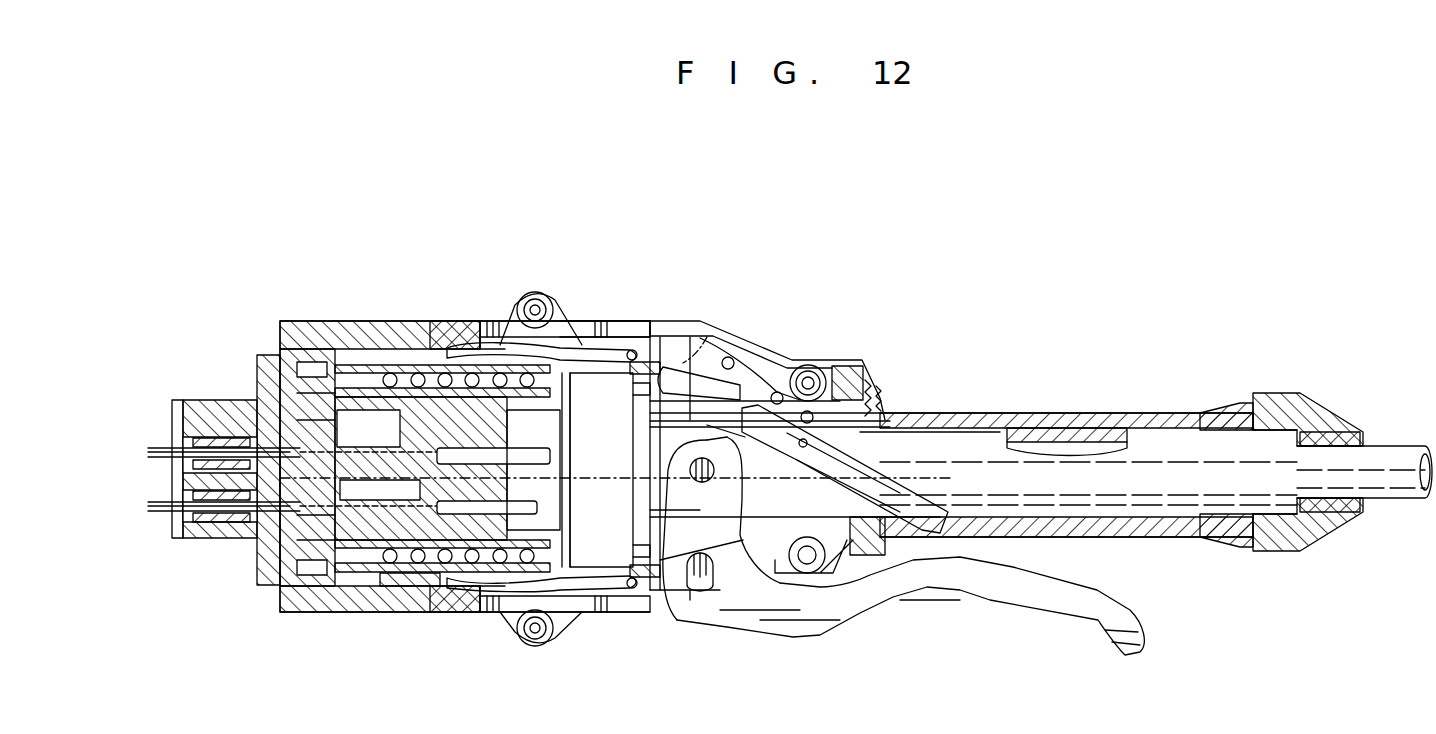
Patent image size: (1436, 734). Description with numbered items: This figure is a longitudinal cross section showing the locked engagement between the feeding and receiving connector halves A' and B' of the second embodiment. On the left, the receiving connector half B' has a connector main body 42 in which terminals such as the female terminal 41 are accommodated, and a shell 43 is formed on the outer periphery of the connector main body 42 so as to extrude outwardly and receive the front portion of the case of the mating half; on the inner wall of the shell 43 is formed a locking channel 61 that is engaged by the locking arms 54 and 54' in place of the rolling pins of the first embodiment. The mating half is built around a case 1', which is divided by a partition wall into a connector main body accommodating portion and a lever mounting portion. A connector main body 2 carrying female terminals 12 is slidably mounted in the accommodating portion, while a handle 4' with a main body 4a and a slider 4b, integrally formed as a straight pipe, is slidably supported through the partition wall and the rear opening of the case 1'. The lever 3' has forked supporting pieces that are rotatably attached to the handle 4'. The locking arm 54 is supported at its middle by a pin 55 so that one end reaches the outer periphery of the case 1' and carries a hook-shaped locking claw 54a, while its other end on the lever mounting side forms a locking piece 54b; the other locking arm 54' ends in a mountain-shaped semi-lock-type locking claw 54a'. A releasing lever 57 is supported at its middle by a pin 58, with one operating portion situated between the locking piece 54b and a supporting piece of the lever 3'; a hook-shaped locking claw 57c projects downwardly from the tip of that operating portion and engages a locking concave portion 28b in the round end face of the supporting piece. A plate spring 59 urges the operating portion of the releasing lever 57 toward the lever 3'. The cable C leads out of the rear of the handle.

The receiving connector half B' is at (408, 402).
The female terminal 12 is at (348, 330).
The female terminal 41 is at (255, 432).
The connector main body 42 is at (235, 562).
The shell 43 is at (283, 600).
The locking channel 61 is at (430, 335).
The locking arm 54 is at (580, 308).
The locking claw 54a is at (541, 300).
The locking arm 54' is at (580, 636).
The locking claw 54a' is at (504, 642).
The locking piece 54b is at (705, 345).
The pin 55 is at (650, 336).
The connector main body 2 is at (480, 600).
The feeding connector half A' is at (1066, 401).
The case 1' is at (795, 380).
The plate spring 59 is at (775, 370).
The pin 58 is at (820, 436).
The releasing lever 57 is at (928, 495).
The locking claw 57c is at (678, 447).
The locking concave portion 28b is at (827, 433).
The main body 4a is at (683, 600).
The handle 4' is at (1078, 428).
The slider 4b is at (1195, 440).
The lever 3' is at (910, 640).
The cable C is at (1395, 455).